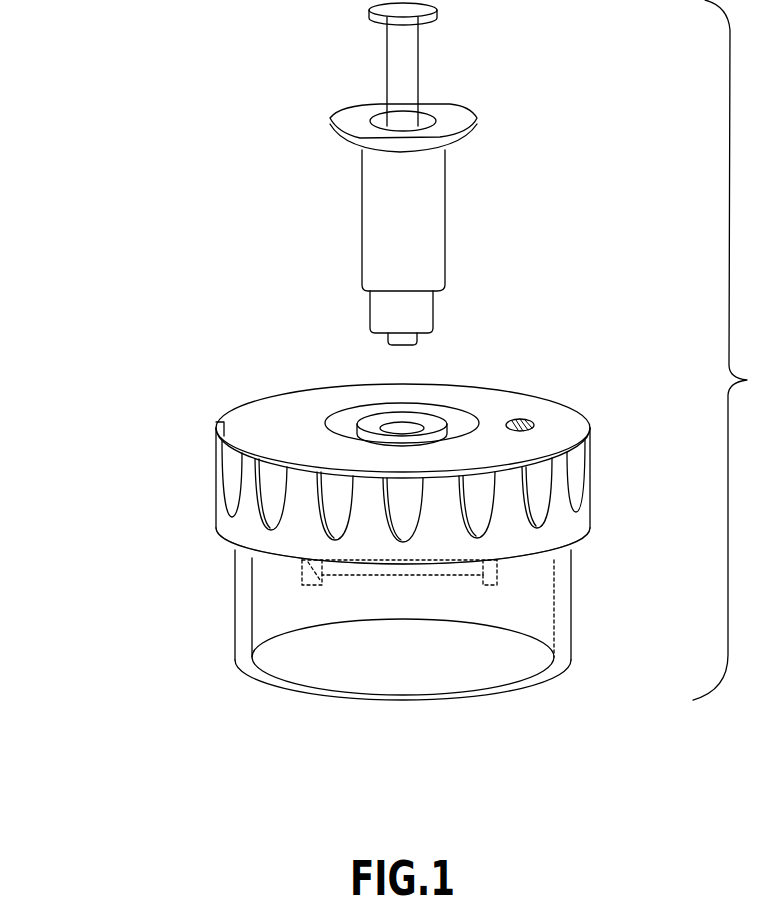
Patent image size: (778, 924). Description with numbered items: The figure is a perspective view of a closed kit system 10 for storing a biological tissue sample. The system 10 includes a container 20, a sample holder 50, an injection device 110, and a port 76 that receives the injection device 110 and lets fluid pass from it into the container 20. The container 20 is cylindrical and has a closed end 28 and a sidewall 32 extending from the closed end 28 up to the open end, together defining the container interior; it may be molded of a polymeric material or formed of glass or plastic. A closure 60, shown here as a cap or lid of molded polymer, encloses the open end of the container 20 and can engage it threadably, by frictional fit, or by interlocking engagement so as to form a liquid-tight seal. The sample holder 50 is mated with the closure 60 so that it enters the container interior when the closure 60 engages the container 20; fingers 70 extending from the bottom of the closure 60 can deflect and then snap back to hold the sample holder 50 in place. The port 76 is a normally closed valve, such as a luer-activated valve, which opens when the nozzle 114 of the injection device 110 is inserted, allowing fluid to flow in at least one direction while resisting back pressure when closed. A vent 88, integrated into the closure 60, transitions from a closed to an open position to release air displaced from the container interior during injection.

The closed kit system 10 is at (116, 188).
The container 20 is at (178, 565).
The closed end 28 is at (393, 699).
The sidewall 32 is at (568, 582).
The sample holder 50 is at (455, 568).
The closure 60 is at (590, 462).
The fingers 70 is at (566, 550).
The port 76 is at (400, 428).
The vent 88 is at (522, 422).
The injection device 110 is at (435, 196).
The nozzle 114 is at (415, 318).